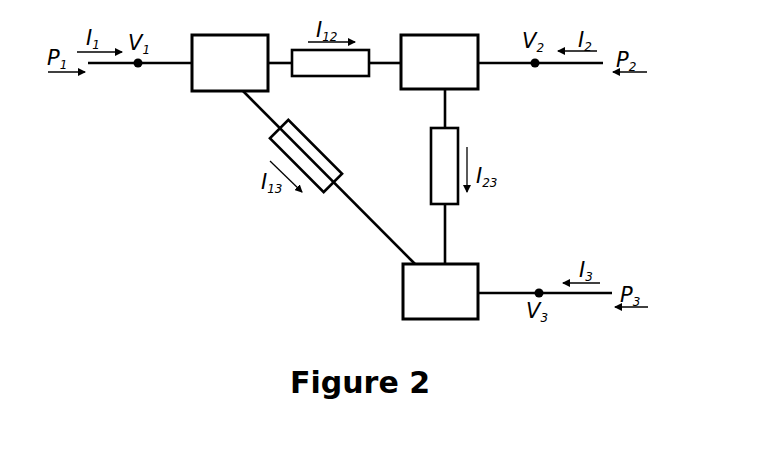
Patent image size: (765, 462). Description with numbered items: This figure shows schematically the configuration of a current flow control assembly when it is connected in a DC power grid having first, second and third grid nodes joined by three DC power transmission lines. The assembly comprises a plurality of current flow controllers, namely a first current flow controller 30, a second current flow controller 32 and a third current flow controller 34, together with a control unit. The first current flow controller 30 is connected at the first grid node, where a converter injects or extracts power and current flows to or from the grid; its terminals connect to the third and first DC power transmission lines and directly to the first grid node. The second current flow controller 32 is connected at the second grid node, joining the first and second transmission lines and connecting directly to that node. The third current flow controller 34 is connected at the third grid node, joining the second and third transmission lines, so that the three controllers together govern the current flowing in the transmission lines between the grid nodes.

The first current flow controller 30 is at (230, 63).
The second current flow controller 32 is at (439, 62).
The third current flow controller 34 is at (440, 291).